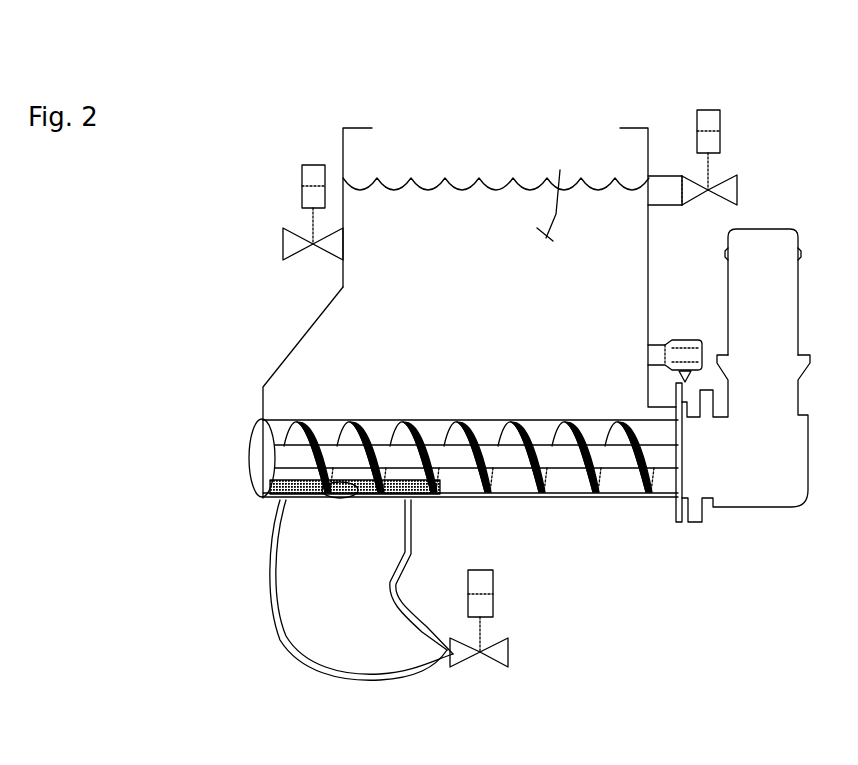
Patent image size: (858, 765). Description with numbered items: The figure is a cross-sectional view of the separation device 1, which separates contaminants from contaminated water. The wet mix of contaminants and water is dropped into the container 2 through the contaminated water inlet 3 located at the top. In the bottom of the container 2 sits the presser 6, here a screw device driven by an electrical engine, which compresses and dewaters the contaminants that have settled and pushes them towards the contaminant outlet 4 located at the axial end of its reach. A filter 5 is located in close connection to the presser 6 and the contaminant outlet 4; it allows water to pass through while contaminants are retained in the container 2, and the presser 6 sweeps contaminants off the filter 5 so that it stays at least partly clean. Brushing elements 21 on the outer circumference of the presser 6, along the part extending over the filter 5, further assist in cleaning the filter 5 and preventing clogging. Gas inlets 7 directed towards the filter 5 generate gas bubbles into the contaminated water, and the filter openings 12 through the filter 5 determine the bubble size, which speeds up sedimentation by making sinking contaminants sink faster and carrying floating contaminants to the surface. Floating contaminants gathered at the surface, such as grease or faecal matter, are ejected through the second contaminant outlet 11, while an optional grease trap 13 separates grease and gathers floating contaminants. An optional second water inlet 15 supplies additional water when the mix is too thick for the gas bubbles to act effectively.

The separation device 1 is at (707, 62).
The container 2 is at (290, 352).
The contaminated water inlet 3 is at (558, 112).
The contaminant outlet 4 is at (248, 458).
The filter 5 is at (433, 500).
The presser 6 is at (507, 462).
The gas inlets 7 is at (404, 507).
The second contaminant outlet 11 is at (738, 190).
The filter openings 12 is at (338, 500).
The grease trap 13 is at (542, 228).
The second water inlet 15 is at (283, 245).
The brushing elements 21 is at (262, 418).